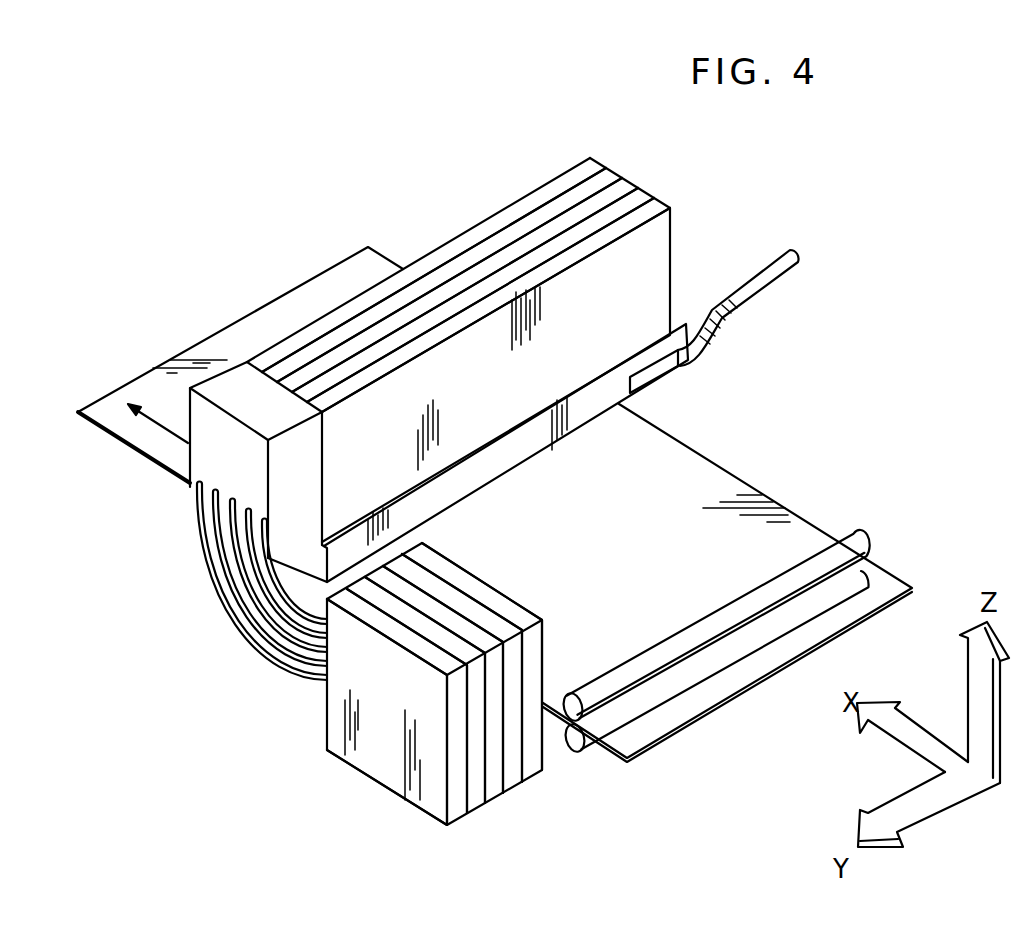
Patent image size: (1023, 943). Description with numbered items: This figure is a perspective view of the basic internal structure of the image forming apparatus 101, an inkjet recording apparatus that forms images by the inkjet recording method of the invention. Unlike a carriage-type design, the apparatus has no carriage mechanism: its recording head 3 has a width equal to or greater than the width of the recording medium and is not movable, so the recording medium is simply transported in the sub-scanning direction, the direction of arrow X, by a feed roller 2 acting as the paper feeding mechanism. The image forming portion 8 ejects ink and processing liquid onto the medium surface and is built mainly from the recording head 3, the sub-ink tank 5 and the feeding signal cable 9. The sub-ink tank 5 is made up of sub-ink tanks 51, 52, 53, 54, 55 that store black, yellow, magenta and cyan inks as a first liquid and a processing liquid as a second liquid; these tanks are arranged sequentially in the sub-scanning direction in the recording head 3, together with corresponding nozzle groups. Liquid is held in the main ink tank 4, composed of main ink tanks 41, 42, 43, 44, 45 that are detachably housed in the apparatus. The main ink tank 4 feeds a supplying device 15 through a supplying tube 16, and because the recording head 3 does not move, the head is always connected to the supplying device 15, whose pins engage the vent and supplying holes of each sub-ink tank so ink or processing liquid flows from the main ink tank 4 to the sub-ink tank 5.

The feed roller 2 is at (850, 548).
The recording head 3 is at (403, 508).
The main ink tank 4 is at (493, 878).
The main ink tank 41 is at (453, 813).
The main ink tank 42 is at (477, 800).
The main ink tank 43 is at (492, 790).
The main ink tank 44 is at (510, 783).
The main ink tank 45 is at (533, 760).
The sub-ink tank 5 is at (324, 198).
The sub-ink tank 51 is at (413, 263).
The sub-ink tank 52 is at (442, 266).
The sub-ink tank 53 is at (480, 262).
The sub-ink tank 54 is at (532, 253).
The sub-ink tank 55 is at (570, 257).
The image forming portion 8 is at (163, 217).
The feeding signal cable 9 is at (745, 293).
The supplying device 15 is at (217, 387).
The supplying tube 16 is at (242, 642).
The image forming apparatus 101 is at (975, 354).